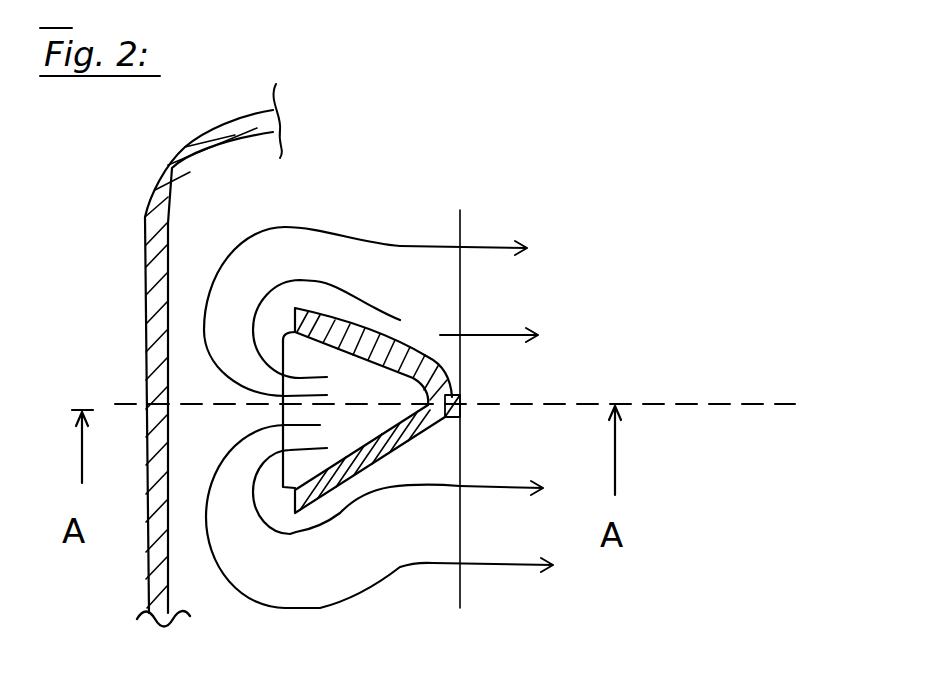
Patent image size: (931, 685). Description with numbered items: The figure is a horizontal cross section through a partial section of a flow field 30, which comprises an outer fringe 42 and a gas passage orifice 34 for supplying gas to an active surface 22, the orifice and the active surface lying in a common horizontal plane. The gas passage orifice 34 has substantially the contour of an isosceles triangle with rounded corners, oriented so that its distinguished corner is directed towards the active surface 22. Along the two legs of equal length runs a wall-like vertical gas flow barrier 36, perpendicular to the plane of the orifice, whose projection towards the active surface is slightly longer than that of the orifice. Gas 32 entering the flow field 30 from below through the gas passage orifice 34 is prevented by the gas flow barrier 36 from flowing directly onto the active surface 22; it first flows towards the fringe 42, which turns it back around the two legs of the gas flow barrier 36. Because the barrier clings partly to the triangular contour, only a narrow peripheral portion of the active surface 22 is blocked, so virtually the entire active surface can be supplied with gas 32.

The active surface 22 is at (652, 348).
The flow field 30 is at (499, 148).
The gas 32 is at (305, 223).
The gas passage orifice 34 is at (367, 389).
The gas flow barrier 36 is at (352, 328).
The fringe 42 is at (144, 283).